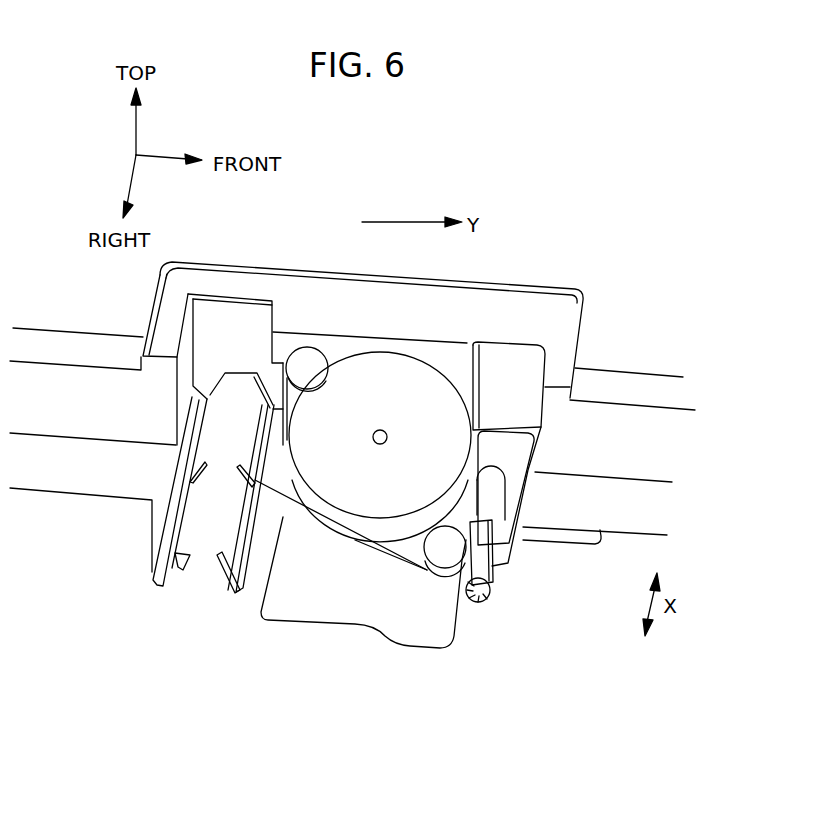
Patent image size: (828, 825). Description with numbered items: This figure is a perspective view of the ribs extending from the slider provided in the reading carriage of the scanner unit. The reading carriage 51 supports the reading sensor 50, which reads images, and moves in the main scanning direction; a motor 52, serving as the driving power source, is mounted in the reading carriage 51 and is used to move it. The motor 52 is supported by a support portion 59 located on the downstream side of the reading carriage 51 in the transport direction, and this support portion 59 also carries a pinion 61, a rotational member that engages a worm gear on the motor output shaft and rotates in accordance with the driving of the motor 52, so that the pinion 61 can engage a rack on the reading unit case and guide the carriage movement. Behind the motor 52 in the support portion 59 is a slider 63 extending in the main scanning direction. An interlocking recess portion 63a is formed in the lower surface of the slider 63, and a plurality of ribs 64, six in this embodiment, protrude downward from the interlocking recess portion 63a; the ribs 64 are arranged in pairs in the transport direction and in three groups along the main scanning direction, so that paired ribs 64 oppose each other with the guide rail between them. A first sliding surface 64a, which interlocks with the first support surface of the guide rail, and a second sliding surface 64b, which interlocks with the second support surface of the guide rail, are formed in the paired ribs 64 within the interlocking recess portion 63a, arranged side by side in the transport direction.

The reading sensor 50 is at (617, 380).
The reading carriage 51 is at (648, 425).
The motor 52 is at (393, 374).
The support portion 59 is at (335, 617).
The pinion 61 is at (493, 577).
The slider 63 is at (205, 374).
The interlocking recess portion 63a is at (238, 380).
The ribs 64 is at (262, 396).
The first sliding surface 64a is at (240, 556).
The second sliding surface 64b is at (192, 552).